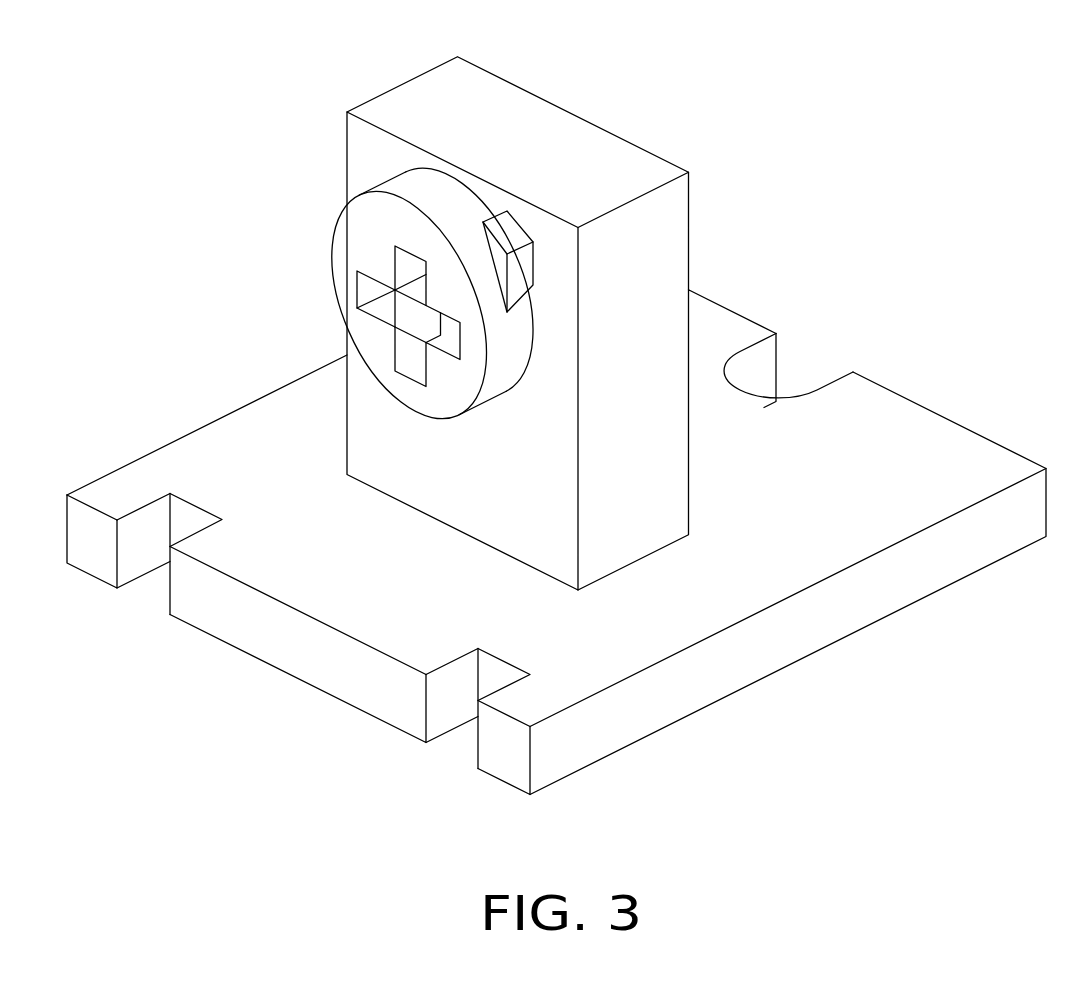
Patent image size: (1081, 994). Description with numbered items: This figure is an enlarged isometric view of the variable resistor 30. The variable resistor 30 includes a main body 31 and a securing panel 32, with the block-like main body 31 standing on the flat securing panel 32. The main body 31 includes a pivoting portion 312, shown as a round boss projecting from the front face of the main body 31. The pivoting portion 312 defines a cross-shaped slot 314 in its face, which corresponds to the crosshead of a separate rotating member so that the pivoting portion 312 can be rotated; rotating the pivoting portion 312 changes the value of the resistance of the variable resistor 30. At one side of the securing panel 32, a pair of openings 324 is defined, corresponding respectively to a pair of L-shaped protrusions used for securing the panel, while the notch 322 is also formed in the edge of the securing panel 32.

The variable resistor 30 is at (601, 92).
The main body 31 is at (650, 257).
The pivoting portion 312 is at (412, 189).
The cross-shaped slot 314 is at (405, 300).
The securing panel 32 is at (922, 455).
The rear notch 322 is at (795, 373).
The openings 324 is at (162, 585).